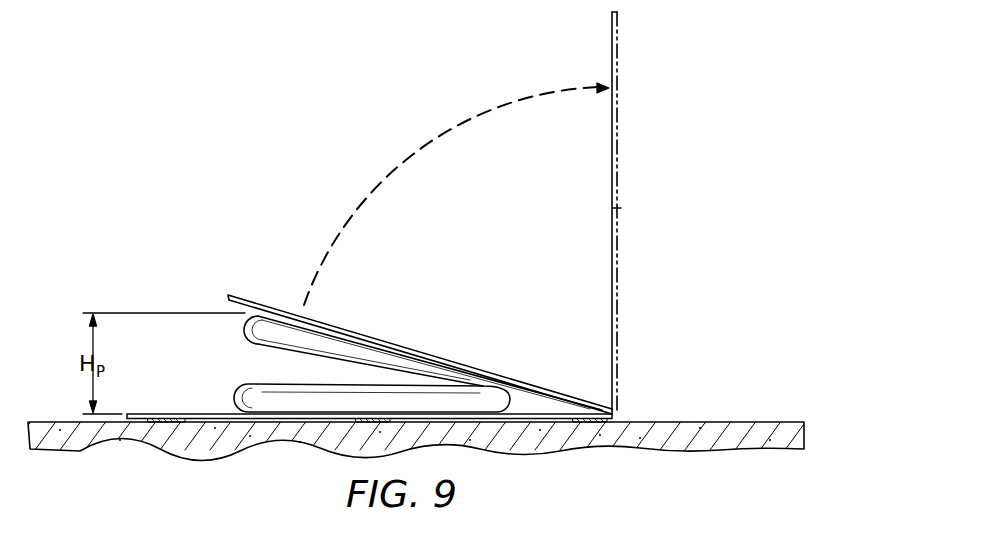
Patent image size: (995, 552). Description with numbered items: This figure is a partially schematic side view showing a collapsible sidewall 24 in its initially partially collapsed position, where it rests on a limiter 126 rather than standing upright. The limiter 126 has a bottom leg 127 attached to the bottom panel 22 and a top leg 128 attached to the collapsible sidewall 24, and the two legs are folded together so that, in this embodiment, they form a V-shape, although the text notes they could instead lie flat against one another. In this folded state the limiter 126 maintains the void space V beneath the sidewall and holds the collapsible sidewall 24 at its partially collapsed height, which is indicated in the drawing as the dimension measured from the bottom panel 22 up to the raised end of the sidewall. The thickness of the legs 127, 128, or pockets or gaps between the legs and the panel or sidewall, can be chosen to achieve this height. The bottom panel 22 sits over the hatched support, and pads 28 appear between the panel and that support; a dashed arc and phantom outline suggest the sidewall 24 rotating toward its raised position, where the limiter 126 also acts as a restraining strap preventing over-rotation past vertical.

The bottom panel 22 is at (556, 406).
The collapsible sidewall 24 is at (525, 390).
The mounting pads 28 is at (141, 422).
The limiter 126 is at (235, 322).
The bottom leg 127 is at (284, 389).
The top leg 128 is at (375, 352).
The void space V is at (527, 405).